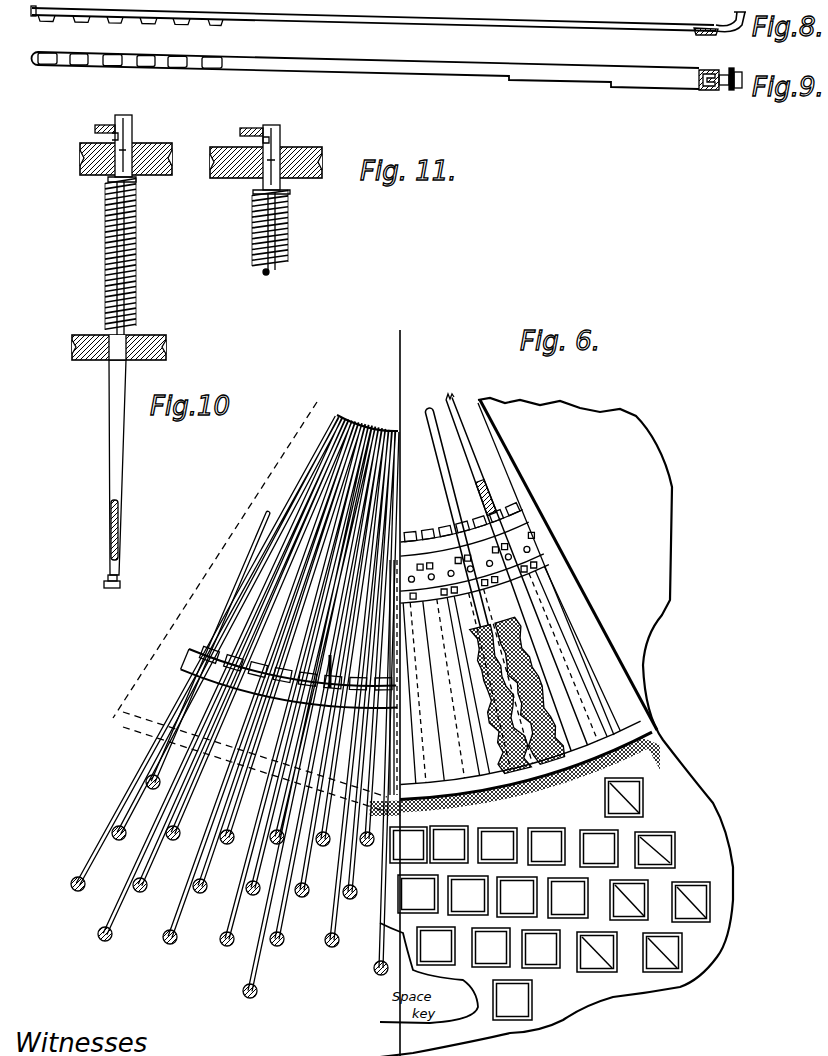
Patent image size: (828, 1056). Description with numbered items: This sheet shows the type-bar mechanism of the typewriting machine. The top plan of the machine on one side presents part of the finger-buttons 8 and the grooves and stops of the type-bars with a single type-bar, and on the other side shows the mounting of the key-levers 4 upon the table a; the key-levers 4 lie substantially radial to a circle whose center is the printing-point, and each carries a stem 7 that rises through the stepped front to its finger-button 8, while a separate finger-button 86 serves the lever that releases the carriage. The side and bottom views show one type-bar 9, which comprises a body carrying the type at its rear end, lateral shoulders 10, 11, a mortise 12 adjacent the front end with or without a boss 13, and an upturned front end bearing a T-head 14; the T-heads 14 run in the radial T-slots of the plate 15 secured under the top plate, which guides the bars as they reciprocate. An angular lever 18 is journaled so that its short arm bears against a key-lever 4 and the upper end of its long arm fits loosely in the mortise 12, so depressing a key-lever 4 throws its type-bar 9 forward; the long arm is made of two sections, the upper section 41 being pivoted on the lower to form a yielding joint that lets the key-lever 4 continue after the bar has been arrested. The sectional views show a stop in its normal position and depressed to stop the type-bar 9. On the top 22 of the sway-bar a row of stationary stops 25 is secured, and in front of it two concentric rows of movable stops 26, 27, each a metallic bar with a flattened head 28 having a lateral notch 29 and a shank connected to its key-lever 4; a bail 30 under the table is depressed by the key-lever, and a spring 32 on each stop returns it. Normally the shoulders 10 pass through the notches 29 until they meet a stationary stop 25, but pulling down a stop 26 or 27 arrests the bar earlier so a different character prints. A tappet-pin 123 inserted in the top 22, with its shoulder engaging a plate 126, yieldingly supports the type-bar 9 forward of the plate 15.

In FIG. 10, the key-lever 4 is at (119, 530).
In FIG. 6, the key-lever 4 is at (148, 861).
In FIG. 6, the stem 7 is at (222, 886).
In FIG. 6, the finger-button 8 is at (550, 883).
In FIG. 8, the type-bar 9 is at (388, 17).
In FIG. 9, the type-bar 9 is at (366, 65).
In FIG. 10, the type-bar 9 is at (100, 126).
In FIG. 11, the type-bar 9 is at (245, 122).
In FIG. 6, the type-bar 9 is at (456, 517).
In FIG. 9, the lateral shoulder 10 is at (407, 88).
In FIG. 6, the lateral shoulder 10 is at (520, 650).
In FIG. 9, the lateral shoulder 11 is at (605, 91).
In FIG. 6, the lateral shoulder 11 is at (578, 700).
In FIG. 9, the mortise 12 is at (703, 90).
In FIG. 8, the boss 13 is at (706, 43).
In FIG. 9, the boss 13 is at (714, 92).
In FIG. 9, the T-head 14 is at (736, 92).
In FIG. 6, the T-head 14 is at (515, 768).
In FIG. 6, the plate 15 is at (511, 675).
In FIG. 6, the angular lever 18 is at (200, 642).
In FIG. 10, the top or table of the sway-bar 22 is at (108, 159).
In FIG. 11, the top or table of the sway-bar 22 is at (278, 162).
In FIG. 6, the stationary stop 25 is at (465, 529).
In FIG. 10, the movable stop 26 is at (140, 222).
In FIG. 10, the movable stop 27 is at (250, 230).
In FIG. 10, the flattened head 28 is at (131, 137).
In FIG. 11, the flattened head 28 is at (283, 147).
In FIG. 6, the flattened head 28 is at (585, 570).
In FIG. 10, the lateral notch 29 is at (110, 141).
In FIG. 11, the lateral notch 29 is at (272, 141).
In FIG. 6, the bail 30 is at (263, 548).
In FIG. 10, the spring 32 is at (133, 256).
In FIG. 11, the spring 32 is at (282, 232).
In FIG. 6, the upper section 41 is at (185, 703).
In FIG. 6, the finger-button 86 is at (512, 1000).
In FIG. 6, the tappet-pin 123 is at (522, 562).
In FIG. 6, the plate 126 is at (522, 546).
In FIG. 10, the table a is at (128, 347).
In FIG. 6, the table a is at (556, 727).